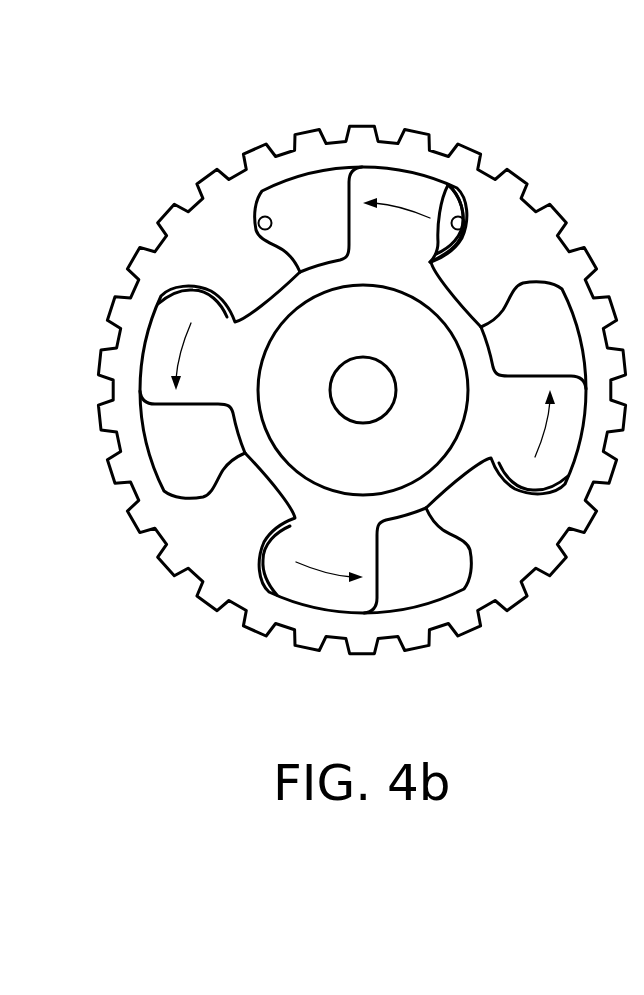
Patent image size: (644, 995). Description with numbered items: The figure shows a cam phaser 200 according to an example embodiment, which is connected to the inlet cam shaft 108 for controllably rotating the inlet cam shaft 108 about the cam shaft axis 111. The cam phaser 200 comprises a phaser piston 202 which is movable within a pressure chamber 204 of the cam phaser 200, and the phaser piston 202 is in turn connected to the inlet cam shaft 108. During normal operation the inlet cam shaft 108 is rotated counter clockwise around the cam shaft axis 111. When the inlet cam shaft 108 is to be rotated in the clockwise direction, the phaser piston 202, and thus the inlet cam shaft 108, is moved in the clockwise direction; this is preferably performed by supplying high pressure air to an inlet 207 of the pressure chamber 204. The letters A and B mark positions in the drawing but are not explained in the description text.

The cam phaser 200 is at (136, 74).
The inlet cam shaft 108 is at (522, 197).
The pressure chamber 204 is at (327, 223).
The phaser piston 202 is at (395, 188).
The inlet 207 is at (258, 218).
The cam shaft axis 111 is at (358, 388).
The direction A is at (407, 343).
The region B is at (428, 264).